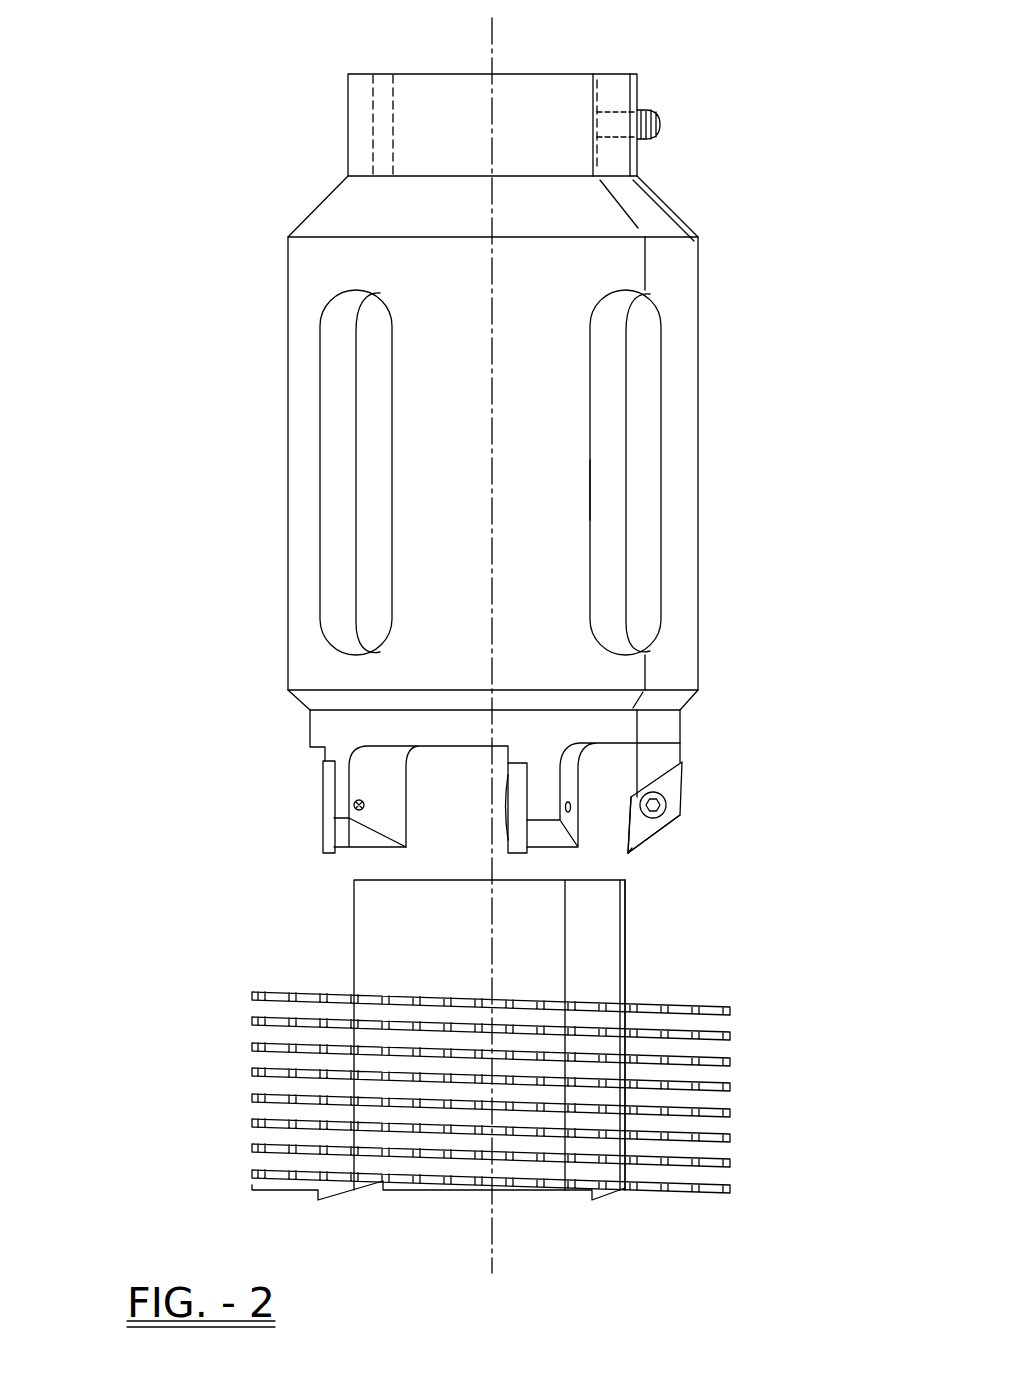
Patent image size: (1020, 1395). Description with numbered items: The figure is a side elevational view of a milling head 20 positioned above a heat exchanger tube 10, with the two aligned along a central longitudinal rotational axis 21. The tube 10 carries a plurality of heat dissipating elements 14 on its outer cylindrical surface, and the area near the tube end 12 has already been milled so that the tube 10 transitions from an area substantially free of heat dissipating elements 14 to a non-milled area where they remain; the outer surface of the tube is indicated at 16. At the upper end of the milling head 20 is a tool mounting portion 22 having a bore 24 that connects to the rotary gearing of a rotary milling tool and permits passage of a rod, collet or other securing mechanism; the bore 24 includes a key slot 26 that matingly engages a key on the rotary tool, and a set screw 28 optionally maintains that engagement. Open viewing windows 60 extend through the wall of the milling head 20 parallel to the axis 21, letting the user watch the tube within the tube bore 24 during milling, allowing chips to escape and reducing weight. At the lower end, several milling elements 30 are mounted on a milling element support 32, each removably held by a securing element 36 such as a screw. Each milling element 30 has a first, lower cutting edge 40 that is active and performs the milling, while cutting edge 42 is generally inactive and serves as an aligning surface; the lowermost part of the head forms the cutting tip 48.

The heat exchanger tube 10 is at (404, 1043).
The end 12 is at (360, 880).
The heat dissipating elements 14 is at (246, 1122).
The outer surface of workpiece 16 is at (625, 930).
The milling head 20 is at (284, 231).
The central longitudinal rotational axis 21 is at (492, 27).
The tool mounting portion 22 is at (348, 122).
The bore 24 is at (588, 104).
The key slot 26 is at (378, 72).
The set screw 28 is at (660, 122).
The milling elements 30 is at (518, 756).
The milling element support 32 is at (667, 750).
The securing element 36 is at (667, 806).
The first cutting edge 40 is at (655, 830).
The cutting edge 42 is at (630, 828).
The cutting tip 48 is at (628, 853).
The viewing window 60 is at (590, 490).